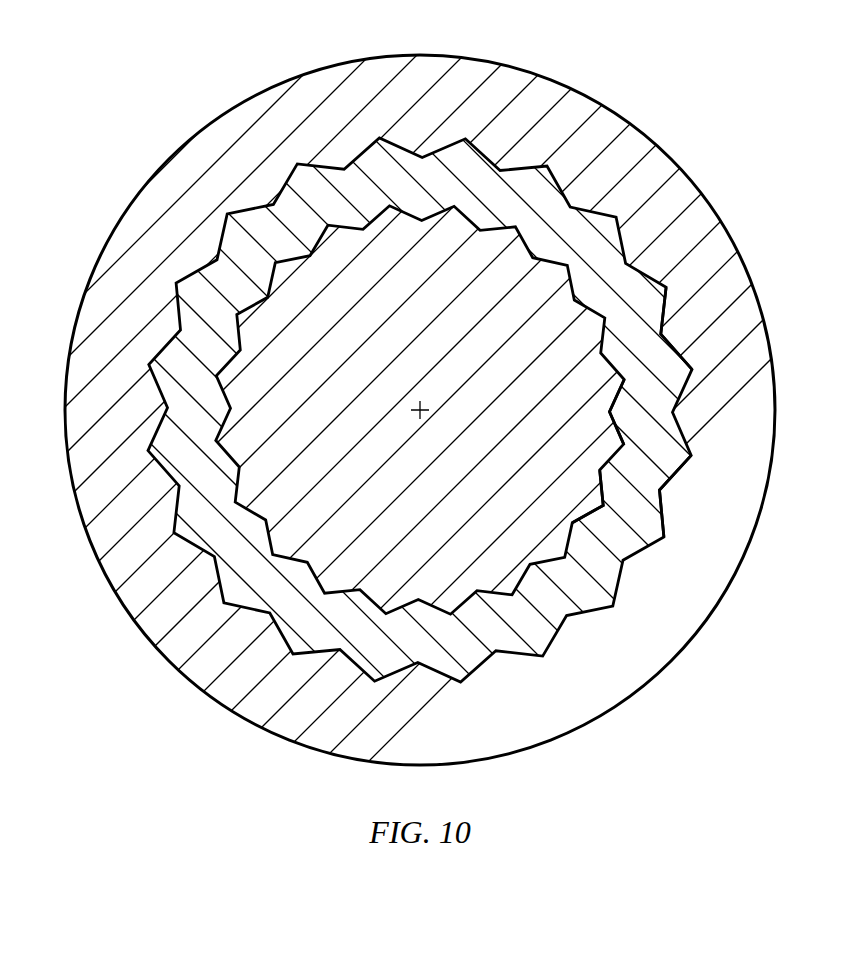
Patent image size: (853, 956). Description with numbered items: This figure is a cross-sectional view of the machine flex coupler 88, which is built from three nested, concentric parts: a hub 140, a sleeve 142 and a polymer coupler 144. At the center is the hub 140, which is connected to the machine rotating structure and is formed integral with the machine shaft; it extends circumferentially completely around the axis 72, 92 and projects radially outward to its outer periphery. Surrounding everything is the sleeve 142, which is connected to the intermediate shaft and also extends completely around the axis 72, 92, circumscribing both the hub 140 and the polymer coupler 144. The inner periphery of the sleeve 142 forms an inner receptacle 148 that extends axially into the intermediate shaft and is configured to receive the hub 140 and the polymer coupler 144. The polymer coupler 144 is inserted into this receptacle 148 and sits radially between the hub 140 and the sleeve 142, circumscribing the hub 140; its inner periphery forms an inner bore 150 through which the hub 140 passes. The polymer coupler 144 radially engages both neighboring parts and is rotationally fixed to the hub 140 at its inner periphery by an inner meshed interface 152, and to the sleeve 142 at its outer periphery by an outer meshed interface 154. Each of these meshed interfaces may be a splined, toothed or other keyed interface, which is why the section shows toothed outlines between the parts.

The machine flex coupler 88 is at (426, 399).
The sleeve 142 is at (603, 96).
The polymer coupler 144 is at (600, 206).
The hub 140 is at (588, 299).
The inner receptacle 148 is at (668, 322).
The inner bore 150 is at (618, 406).
The inner meshed interface 152 is at (592, 487).
The outer meshed interface 154 is at (668, 489).
The axis 72 is at (426, 410).
The axis 92 is at (418, 422).